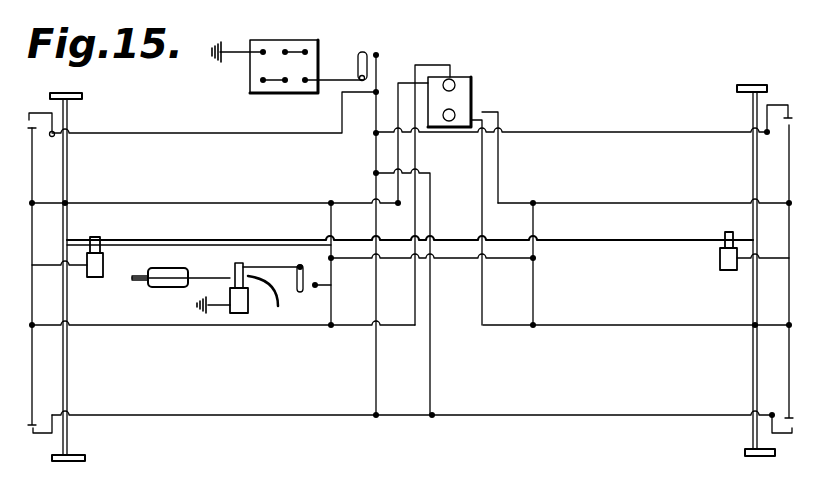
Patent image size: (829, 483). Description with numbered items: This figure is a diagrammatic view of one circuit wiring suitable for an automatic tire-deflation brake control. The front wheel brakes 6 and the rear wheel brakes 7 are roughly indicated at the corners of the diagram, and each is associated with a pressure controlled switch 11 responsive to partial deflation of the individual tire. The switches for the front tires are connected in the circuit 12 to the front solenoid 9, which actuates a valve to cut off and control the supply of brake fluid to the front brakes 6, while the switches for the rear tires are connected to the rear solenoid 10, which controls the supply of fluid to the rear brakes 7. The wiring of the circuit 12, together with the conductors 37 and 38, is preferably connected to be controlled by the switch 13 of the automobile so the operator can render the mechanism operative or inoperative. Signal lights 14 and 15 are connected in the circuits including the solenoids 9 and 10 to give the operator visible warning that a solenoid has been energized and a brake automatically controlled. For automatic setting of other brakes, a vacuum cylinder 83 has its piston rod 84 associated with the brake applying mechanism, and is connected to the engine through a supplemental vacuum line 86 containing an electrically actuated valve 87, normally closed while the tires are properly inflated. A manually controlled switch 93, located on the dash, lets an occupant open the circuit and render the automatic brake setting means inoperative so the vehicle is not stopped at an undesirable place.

The front wheel brakes 6 is at (83, 97).
The rear wheel brakes 7 is at (86, 458).
The front solenoid 9 is at (98, 277).
The rear solenoid 10 is at (720, 265).
The pressure controlled switch 11 is at (24, 118).
The circuit 12 is at (669, 185).
The switch of the automobile 13 is at (377, 55).
The signal light 14 is at (452, 83).
The signal light 15 is at (452, 113).
The conductor 37 is at (32, 173).
The conductor 38 is at (222, 122).
The vacuum cylinder 83 is at (165, 288).
The piston rod 84 is at (140, 281).
The supplemental vacuum line 86 is at (207, 277).
The electrically actuated valve 87 is at (240, 314).
The manually controlled switch 93 is at (299, 292).